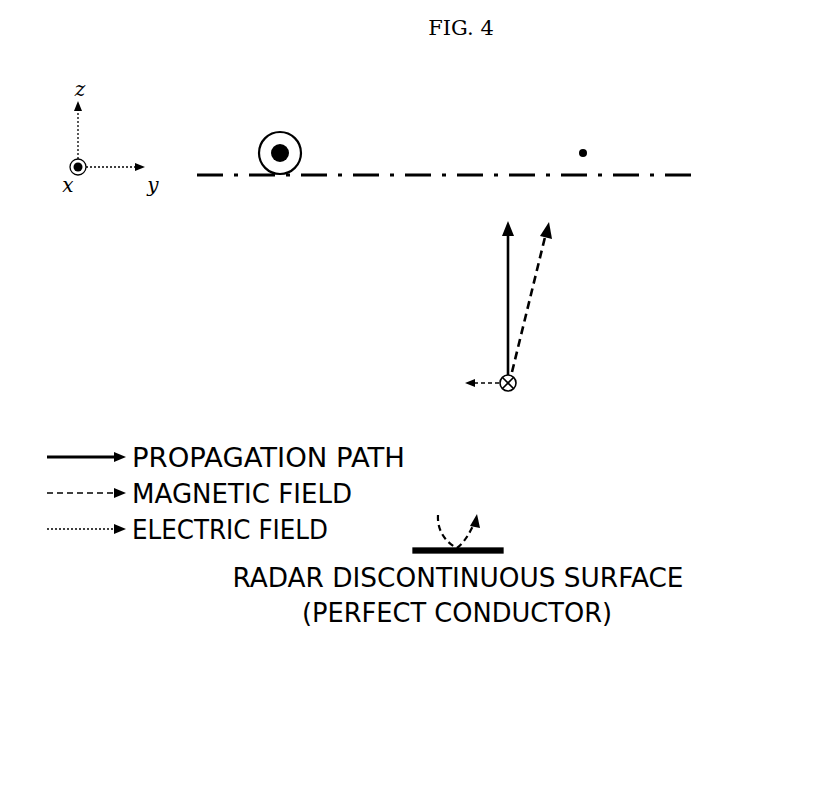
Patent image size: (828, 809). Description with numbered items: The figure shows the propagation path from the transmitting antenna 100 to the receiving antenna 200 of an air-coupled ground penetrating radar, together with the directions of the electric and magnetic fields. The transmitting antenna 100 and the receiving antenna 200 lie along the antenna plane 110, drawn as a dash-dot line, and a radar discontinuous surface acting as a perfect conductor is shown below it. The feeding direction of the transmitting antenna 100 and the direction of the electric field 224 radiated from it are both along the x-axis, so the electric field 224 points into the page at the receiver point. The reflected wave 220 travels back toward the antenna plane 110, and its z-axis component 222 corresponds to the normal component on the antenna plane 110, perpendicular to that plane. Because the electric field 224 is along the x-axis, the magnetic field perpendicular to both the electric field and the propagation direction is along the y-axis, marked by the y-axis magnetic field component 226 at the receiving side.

The transmitting antenna 100 is at (280, 132).
The antenna plane 110 is at (367, 180).
The receiving antenna 200 is at (583, 153).
The reflected wave 220 is at (540, 273).
The z-axis component of the reflected wave 222 is at (507, 272).
The electric field 224 is at (513, 418).
The magnetic field component Hy 226 is at (427, 383).